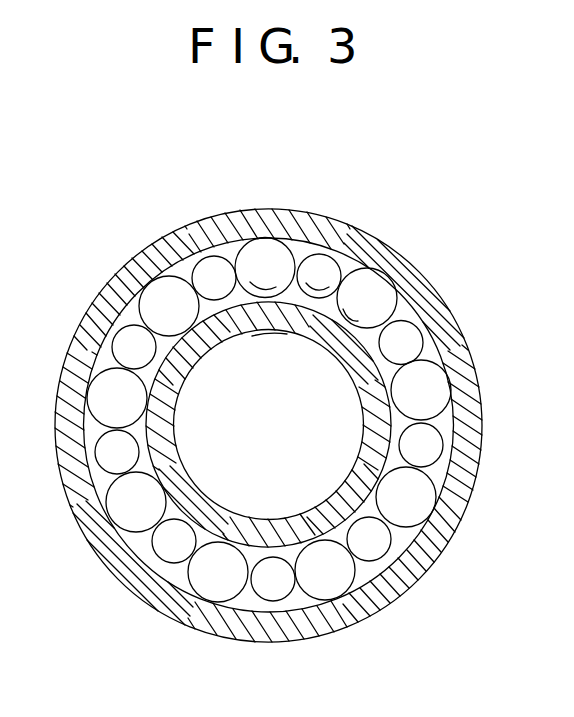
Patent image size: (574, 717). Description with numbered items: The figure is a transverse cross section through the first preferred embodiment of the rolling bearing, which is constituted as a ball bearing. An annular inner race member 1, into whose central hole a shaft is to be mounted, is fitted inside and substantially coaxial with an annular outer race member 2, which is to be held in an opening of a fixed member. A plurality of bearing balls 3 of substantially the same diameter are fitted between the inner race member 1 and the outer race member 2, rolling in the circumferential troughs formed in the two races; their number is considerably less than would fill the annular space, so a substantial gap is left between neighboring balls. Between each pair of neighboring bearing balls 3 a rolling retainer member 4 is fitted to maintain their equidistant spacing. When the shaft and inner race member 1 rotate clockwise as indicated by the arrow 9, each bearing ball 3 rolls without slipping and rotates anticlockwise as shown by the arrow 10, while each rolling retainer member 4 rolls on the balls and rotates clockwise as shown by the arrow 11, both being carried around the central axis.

The inner race member 1 is at (193, 508).
The outer race member 2 is at (152, 583).
The bearing balls 3 is at (263, 258).
The rolling retainer member 4 is at (210, 272).
The arrow 9 is at (265, 334).
The arrow 10 is at (264, 288).
The arrow 11 is at (317, 288).